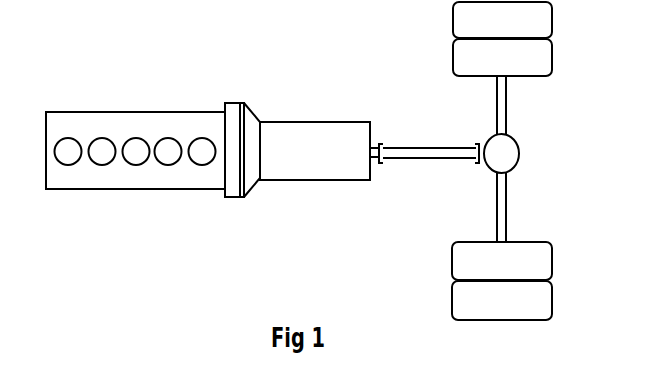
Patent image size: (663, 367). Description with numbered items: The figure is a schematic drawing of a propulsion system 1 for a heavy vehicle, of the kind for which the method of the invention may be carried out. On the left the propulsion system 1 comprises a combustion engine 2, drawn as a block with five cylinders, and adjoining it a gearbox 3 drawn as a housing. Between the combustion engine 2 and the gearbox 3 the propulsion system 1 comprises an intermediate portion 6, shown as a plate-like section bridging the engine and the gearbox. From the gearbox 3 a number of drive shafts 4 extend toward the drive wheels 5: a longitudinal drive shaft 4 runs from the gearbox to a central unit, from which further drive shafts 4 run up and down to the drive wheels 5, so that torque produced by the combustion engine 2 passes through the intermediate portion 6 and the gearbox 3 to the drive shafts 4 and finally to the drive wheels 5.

The propulsion system 1 is at (174, 69).
The combustion engine 2 is at (119, 177).
The gearbox 3 is at (327, 160).
The drive shafts 4 is at (425, 153).
The drive wheels 5 is at (532, 55).
The intermediate portion 6 is at (237, 142).